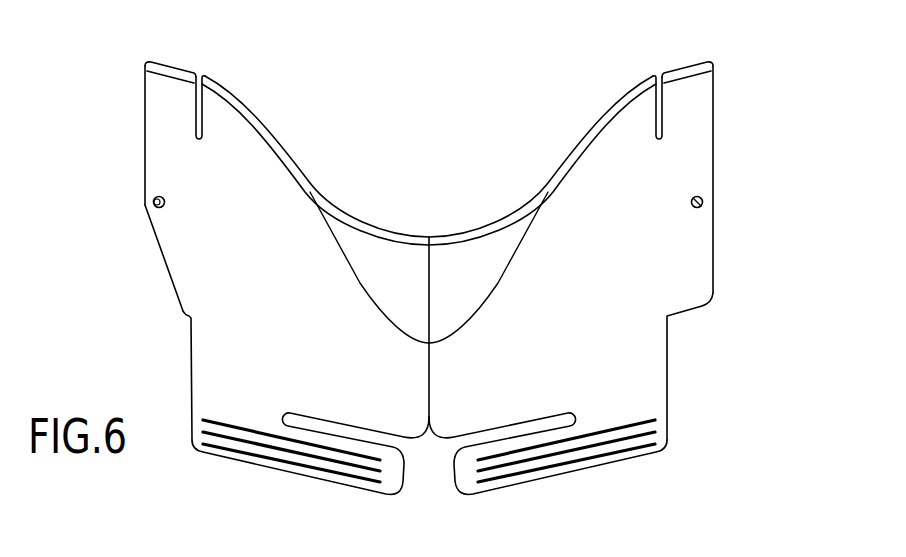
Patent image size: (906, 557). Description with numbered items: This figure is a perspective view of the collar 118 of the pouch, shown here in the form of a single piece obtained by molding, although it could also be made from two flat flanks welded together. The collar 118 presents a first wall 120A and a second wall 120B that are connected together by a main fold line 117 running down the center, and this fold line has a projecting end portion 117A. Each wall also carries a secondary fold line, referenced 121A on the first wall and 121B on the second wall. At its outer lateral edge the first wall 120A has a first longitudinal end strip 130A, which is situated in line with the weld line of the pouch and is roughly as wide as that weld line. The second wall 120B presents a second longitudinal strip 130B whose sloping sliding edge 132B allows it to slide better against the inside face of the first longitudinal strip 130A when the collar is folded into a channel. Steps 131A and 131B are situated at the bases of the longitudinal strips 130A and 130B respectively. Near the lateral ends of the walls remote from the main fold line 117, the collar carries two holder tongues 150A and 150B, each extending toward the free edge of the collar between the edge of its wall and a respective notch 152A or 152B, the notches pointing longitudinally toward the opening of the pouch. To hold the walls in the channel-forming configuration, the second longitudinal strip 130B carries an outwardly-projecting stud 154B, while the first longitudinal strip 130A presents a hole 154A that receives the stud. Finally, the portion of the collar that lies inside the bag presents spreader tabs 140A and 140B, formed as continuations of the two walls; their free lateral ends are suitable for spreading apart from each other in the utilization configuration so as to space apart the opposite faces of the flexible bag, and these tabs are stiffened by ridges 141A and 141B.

The collar 118 is at (731, 261).
The second wall 120B is at (248, 214).
The first wall 120A is at (653, 214).
The second longitudinal strip 130B is at (157, 173).
The first longitudinal end strip 130A is at (702, 173).
The holder tongue 150B is at (173, 77).
The holder tongue 150A is at (683, 75).
The notch 152B is at (197, 115).
The notch 152A is at (662, 110).
The stud 154B is at (150, 203).
The hole 154A is at (700, 207).
The sliding edge 132B is at (158, 248).
The step 131B is at (190, 323).
The step 131A is at (680, 313).
The secondary fold line 121B is at (363, 285).
The secondary fold line 121A is at (497, 285).
The main fold line 117 is at (430, 383).
The projecting end portion 117A is at (429, 278).
The spreader tab 140B is at (388, 470).
The spreader tab 140A is at (467, 470).
The ridges 141B is at (293, 465).
The ridges 141A is at (560, 465).